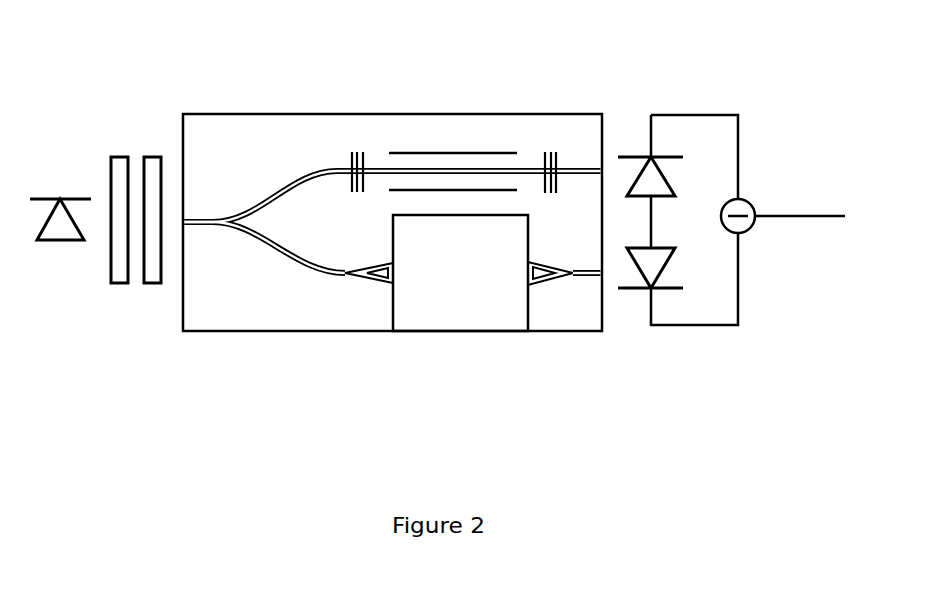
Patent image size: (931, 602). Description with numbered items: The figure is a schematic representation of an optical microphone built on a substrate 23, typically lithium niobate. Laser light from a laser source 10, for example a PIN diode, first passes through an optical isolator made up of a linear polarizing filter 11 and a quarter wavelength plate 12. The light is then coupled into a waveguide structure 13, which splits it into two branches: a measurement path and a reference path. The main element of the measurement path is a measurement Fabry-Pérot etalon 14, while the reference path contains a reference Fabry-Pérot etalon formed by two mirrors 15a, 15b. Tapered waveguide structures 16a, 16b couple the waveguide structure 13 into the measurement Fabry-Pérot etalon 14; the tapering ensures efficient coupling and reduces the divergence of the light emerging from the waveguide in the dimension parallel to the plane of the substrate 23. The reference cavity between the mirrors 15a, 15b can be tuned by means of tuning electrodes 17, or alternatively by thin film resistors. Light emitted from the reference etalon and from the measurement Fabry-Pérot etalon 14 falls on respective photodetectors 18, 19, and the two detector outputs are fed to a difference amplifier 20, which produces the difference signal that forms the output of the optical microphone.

The laser source 10 is at (57, 260).
The linear polarizing filter 11 is at (122, 301).
The quarter wavelength plate 12 is at (158, 299).
The waveguide structure 13 is at (313, 247).
The measurement Fabry-Pérot etalon 14 is at (460, 273).
The mirror 15a is at (357, 132).
The mirror 15b is at (547, 132).
The tapered waveguide structure 16a is at (378, 299).
The tapered waveguide structure 16b is at (553, 299).
The tuning electrodes 17 is at (463, 179).
The photodetector 18 is at (628, 132).
The photodetector 19 is at (629, 286).
The difference amplifier 20 is at (765, 196).
The substrate 23 is at (193, 106).